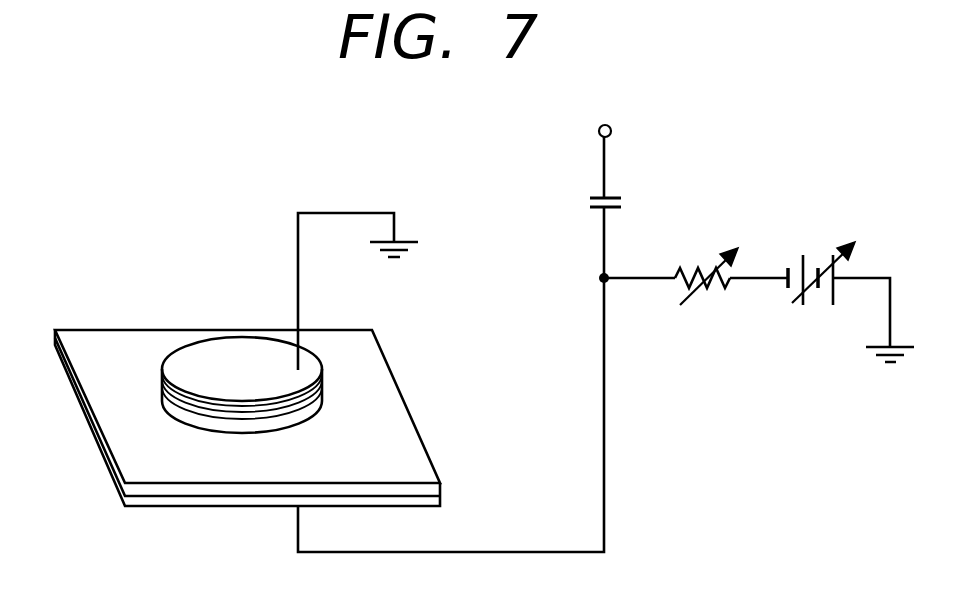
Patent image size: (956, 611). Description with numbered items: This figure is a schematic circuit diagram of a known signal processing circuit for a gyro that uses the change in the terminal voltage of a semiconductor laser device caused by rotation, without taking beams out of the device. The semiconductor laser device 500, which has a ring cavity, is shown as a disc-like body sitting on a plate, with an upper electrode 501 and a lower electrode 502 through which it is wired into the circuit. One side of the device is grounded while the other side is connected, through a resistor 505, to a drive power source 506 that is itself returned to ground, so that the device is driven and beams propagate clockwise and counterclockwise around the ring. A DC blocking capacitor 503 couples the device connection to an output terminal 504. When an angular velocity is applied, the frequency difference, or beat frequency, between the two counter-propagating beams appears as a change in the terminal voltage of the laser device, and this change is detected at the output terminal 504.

The semiconductor laser device 500 is at (412, 393).
The upper electrode 501 is at (209, 360).
The lower electrode 502 is at (203, 508).
The DC blocking capacitor 503 is at (588, 201).
The output terminal 504 is at (598, 130).
The resistor 505 is at (689, 264).
The drive power source 506 is at (815, 258).